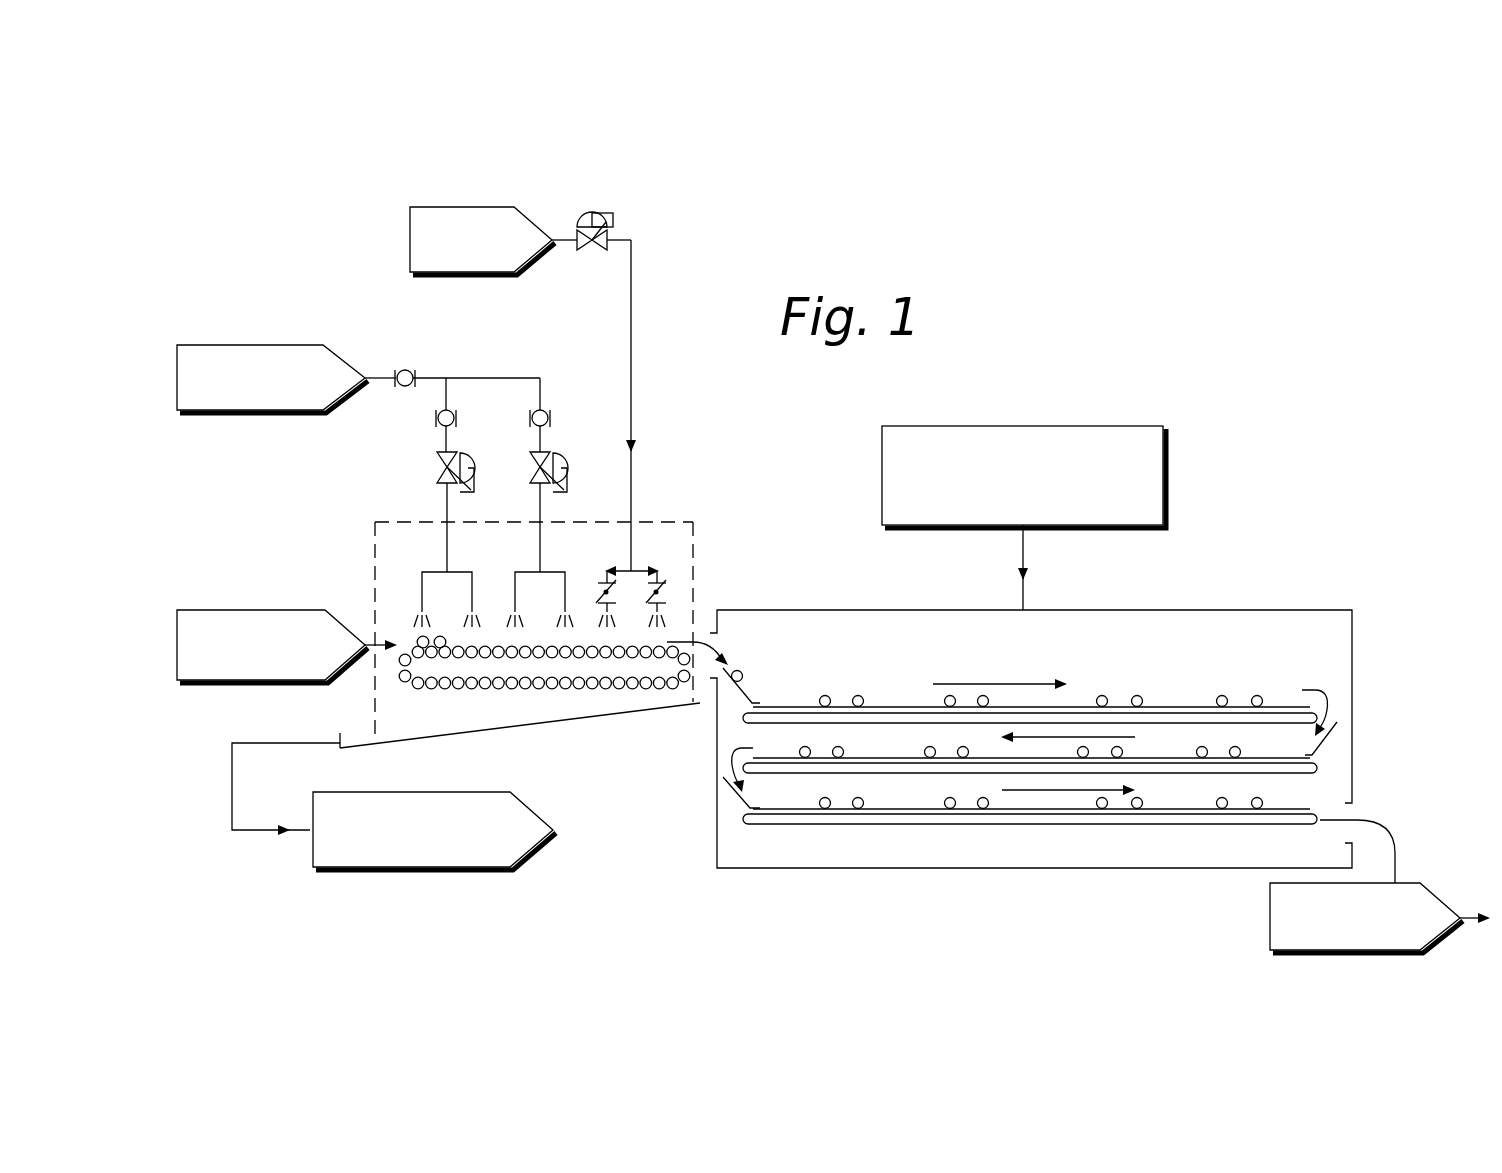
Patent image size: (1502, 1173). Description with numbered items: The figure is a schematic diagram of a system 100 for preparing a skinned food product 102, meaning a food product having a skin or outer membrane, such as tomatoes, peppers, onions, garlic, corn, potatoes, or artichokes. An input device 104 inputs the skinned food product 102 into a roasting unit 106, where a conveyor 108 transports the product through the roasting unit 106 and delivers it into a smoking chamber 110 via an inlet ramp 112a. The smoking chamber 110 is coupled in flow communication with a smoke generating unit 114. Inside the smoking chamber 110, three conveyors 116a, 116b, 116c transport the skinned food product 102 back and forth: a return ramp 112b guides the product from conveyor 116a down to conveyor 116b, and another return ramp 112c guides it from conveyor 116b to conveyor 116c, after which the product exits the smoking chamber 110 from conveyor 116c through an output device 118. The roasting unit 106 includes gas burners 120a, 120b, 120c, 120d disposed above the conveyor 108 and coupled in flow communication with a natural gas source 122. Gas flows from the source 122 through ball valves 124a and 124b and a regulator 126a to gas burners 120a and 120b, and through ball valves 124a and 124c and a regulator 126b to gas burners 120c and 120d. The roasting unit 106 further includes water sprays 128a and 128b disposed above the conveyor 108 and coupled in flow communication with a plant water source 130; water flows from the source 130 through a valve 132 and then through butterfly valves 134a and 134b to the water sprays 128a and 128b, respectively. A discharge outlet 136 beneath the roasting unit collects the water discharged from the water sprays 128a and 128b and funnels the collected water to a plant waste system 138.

The system 100 is at (1200, 398).
The skinned food product 102 is at (416, 644).
The input device 104 is at (278, 608).
The roasting unit 106 is at (410, 520).
The conveyor 108 is at (452, 690).
The smoking chamber 110 is at (1296, 607).
The inlet ramp 112a is at (747, 690).
The return ramp 112b is at (1324, 745).
The return ramp 112c is at (738, 800).
The smoke generating unit 114 is at (1167, 470).
The conveyor 116a is at (1277, 706).
The conveyor 116b is at (1167, 757).
The conveyor 116c is at (1214, 827).
The output device 118 is at (1270, 922).
The gas burner 120a is at (421, 590).
The gas burner 120b is at (473, 590).
The gas burner 120c is at (514, 590).
The gas burner 120d is at (566, 590).
The natural gas source 122 is at (266, 344).
The ball valve 124a is at (405, 370).
The ball valve 124b is at (437, 418).
The ball valve 124c is at (553, 408).
The regulator 126a is at (438, 468).
The regulator 126b is at (560, 462).
The water spray 128a is at (605, 607).
The water spray 128b is at (665, 607).
The plant water source 130 is at (468, 207).
The valve 132 is at (600, 207).
The butterfly valve 134a is at (604, 572).
The butterfly valve 134b is at (663, 575).
The discharge outlet 136 is at (497, 729).
The plant waste system 138 is at (418, 870).